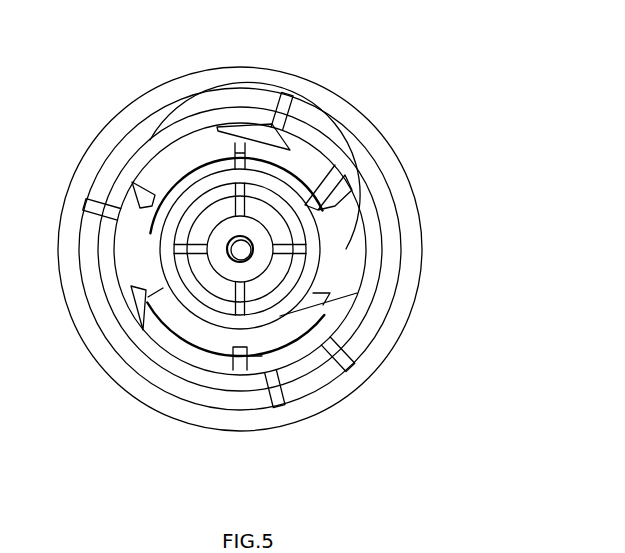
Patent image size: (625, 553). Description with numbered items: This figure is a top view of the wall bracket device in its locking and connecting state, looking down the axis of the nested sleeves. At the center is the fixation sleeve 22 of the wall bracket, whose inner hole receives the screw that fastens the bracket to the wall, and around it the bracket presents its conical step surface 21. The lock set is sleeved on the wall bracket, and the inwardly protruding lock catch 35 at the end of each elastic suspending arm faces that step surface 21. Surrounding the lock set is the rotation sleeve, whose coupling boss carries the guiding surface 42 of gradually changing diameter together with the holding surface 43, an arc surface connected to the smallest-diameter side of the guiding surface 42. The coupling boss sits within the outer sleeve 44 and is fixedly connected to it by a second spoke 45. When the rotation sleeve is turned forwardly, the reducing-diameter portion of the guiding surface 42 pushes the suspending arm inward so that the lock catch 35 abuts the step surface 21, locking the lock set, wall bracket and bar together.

The step surface 21 is at (228, 168).
The fixation sleeve 22 is at (245, 252).
The lock catch 35 is at (286, 183).
The guiding surface 42 is at (240, 138).
The holding surface 43 is at (305, 168).
The outer sleeve 44 is at (405, 200).
The second spoke 45 is at (348, 133).